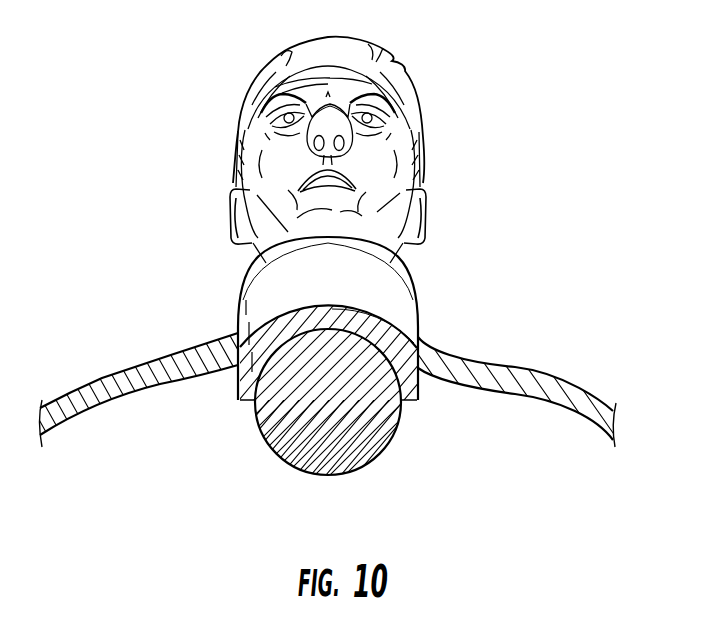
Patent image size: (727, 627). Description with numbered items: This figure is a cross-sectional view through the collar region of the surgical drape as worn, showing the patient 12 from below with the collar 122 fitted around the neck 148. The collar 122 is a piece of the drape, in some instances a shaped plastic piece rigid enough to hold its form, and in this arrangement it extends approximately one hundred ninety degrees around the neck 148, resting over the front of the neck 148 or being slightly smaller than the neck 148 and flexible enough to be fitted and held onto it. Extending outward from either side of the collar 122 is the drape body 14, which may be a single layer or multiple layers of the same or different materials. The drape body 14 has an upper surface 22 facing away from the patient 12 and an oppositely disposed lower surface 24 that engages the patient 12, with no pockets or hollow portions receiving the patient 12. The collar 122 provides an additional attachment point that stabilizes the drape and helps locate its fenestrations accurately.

The patient 12 is at (403, 266).
The collar 122 is at (420, 338).
The neck 148 is at (343, 430).
The upper surface 22 is at (114, 366).
The lower surface 24 is at (128, 403).
The drape body 14 is at (522, 368).